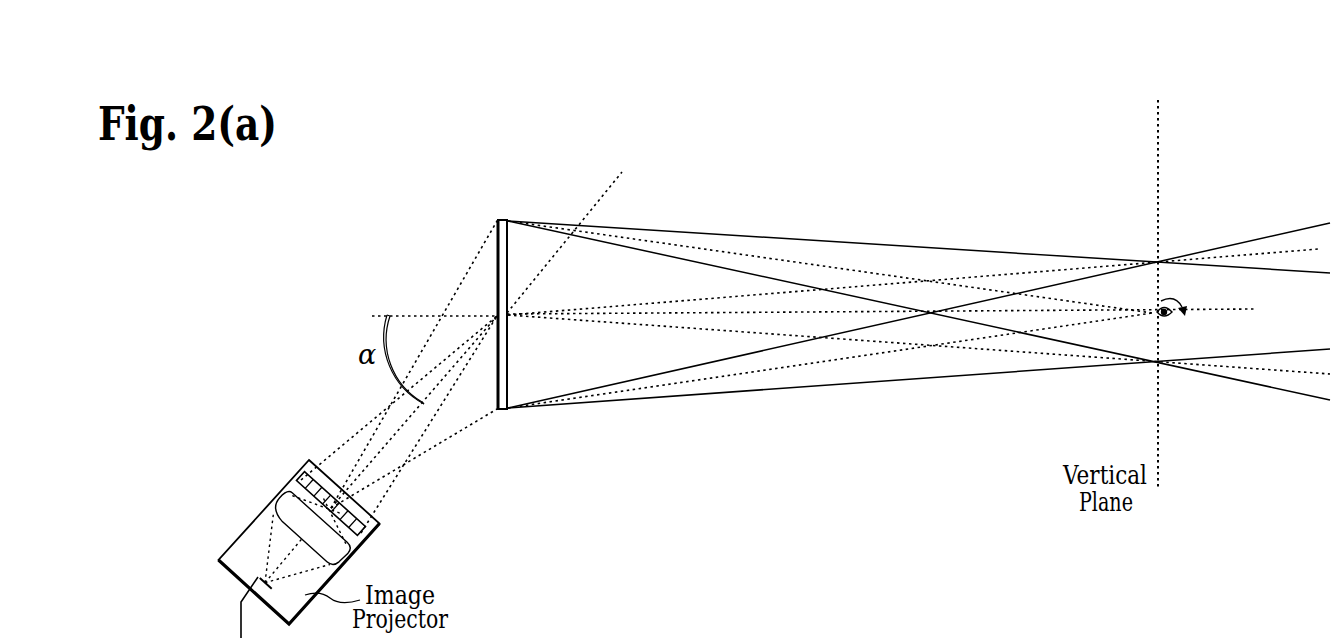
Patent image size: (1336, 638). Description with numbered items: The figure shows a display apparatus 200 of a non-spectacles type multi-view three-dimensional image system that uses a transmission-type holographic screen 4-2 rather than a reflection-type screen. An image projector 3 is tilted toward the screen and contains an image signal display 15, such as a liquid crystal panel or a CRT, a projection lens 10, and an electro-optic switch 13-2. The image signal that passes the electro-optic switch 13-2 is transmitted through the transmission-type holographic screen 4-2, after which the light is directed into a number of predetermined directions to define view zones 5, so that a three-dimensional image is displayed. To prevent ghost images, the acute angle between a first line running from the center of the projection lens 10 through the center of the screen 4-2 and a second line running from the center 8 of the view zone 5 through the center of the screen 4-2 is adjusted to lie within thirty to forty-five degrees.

The display apparatus 200 is at (341, 277).
The electro-optic switch 13-2 is at (330, 504).
The projection lens 10 is at (311, 529).
The image projector 3 is at (266, 583).
The image signal display 15 is at (250, 575).
The transmission-type holographic screen 4-2 is at (506, 412).
The view zones 5 is at (1102, 357).
The center of the view-zone 8 is at (1157, 307).